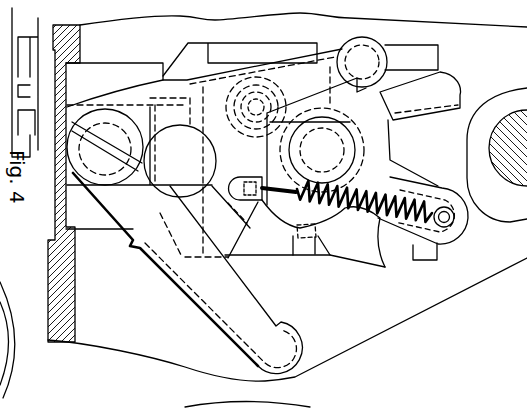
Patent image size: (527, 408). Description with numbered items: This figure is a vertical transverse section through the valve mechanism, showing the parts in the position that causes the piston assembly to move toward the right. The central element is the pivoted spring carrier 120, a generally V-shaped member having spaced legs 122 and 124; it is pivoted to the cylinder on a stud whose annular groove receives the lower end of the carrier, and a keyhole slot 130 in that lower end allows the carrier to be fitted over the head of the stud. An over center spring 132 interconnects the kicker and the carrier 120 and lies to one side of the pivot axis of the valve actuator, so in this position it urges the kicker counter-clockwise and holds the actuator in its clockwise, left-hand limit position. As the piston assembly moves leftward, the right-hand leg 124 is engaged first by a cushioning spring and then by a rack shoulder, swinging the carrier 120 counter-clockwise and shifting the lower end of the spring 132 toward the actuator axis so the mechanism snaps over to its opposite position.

The spring carrier 120 is at (146, 268).
The leg 122 is at (380, 40).
The leg 124 is at (298, 350).
The keyhole slot 130 is at (257, 95).
The over center spring 132 is at (373, 265).